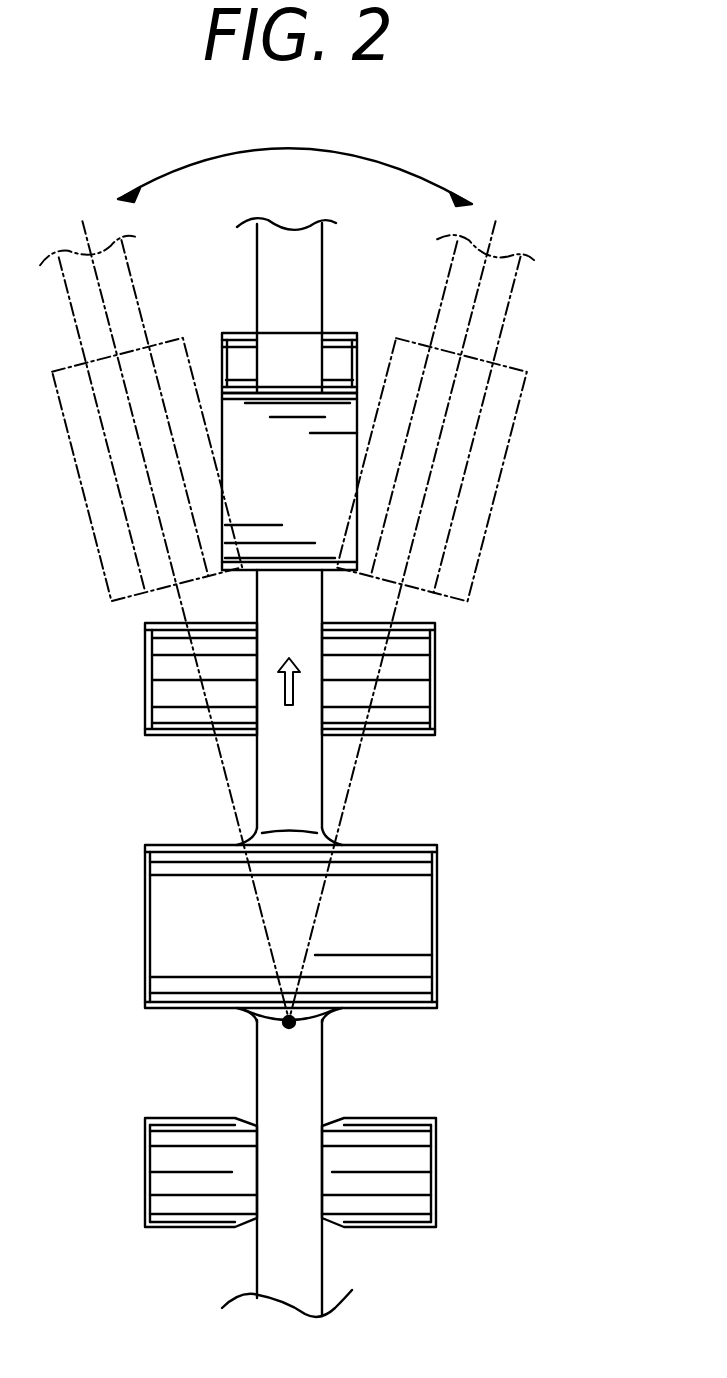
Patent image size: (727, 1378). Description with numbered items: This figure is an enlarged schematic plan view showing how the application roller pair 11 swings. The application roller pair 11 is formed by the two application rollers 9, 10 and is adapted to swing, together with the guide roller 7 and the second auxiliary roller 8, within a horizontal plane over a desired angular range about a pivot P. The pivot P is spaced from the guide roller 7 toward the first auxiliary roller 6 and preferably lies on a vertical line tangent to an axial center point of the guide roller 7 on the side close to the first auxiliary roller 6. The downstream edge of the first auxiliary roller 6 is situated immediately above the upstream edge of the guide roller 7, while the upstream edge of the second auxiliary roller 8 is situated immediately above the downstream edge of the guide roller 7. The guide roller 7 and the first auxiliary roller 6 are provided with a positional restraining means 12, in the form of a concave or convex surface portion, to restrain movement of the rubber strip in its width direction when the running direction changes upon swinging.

The first auxiliary roller 6 is at (412, 1160).
The guide roller 7 is at (407, 910).
The second auxiliary roller 8 is at (423, 692).
The application roller 9 is at (343, 348).
The application roller 10 is at (330, 498).
The application roller pair 11 is at (373, 468).
The positional restraining means 12 is at (248, 1018).
The pivot point P is at (297, 1033).